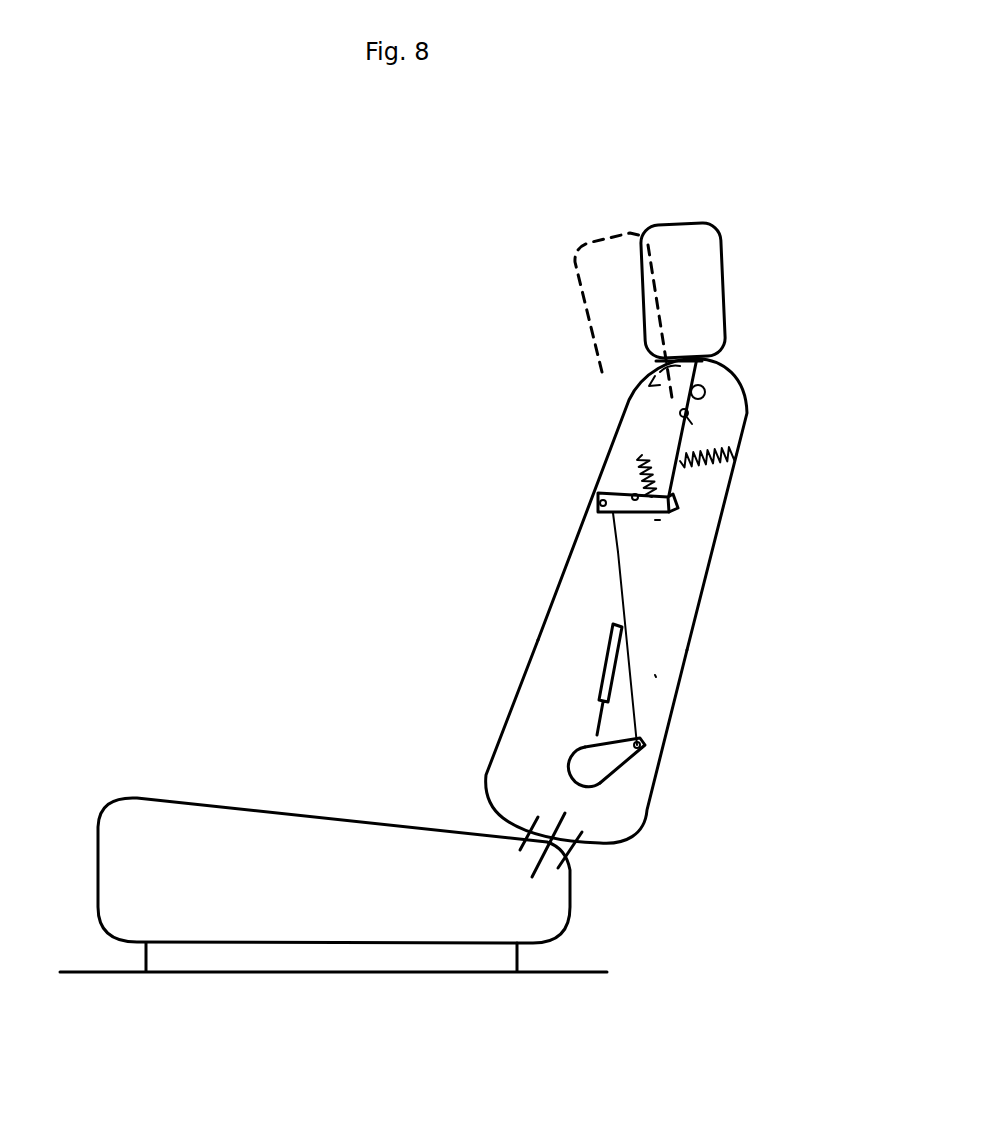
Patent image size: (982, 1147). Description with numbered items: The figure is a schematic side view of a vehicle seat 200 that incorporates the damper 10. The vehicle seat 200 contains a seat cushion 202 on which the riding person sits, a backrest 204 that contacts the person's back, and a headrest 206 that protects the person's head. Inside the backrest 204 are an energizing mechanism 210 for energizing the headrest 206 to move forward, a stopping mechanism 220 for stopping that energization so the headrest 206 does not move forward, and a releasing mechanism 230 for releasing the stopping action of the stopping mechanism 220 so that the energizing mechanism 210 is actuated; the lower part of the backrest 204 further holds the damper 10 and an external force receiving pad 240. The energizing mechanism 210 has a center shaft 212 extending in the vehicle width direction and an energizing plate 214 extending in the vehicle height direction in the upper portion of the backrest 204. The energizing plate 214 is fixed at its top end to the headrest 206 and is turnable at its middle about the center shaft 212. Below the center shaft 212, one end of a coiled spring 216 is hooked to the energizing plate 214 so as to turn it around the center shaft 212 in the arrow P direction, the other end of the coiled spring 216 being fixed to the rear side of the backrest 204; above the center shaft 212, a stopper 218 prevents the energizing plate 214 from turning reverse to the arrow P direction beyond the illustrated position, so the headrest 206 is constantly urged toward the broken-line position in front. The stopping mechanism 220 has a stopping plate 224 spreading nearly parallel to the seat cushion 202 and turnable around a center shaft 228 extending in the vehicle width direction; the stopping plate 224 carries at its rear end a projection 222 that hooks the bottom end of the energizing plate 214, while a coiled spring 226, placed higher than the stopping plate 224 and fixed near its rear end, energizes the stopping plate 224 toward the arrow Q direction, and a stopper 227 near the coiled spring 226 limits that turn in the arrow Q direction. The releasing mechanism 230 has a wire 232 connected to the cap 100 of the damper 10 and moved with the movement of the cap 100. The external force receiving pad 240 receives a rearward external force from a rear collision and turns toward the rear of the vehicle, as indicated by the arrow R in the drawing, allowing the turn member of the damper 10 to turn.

The vehicle seat 200 is at (438, 241).
The seat cushion 202 is at (205, 786).
The backrest 204 is at (537, 595).
The headrest 206 is at (580, 248).
The energizing mechanism 210 is at (706, 443).
The center shaft 212 is at (652, 378).
The energizing plate 214 is at (680, 412).
The coiled spring 216 is at (740, 462).
The stopper 218 is at (706, 390).
The stopping mechanism 220 is at (670, 536).
The projection 222 is at (672, 497).
The stopping plate 224 is at (623, 512).
The coiled spring 226 is at (640, 453).
The stopper 227 is at (633, 492).
The center shaft 228 is at (600, 500).
The releasing mechanism 230 is at (524, 711).
The wire 232 is at (623, 605).
The external force receiving pad 240 is at (622, 635).
The damper 10 is at (547, 777).
The cap 100 is at (597, 780).
The arrow P direction P is at (668, 373).
The arrow Q direction Q is at (665, 538).
The direction R is at (673, 683).